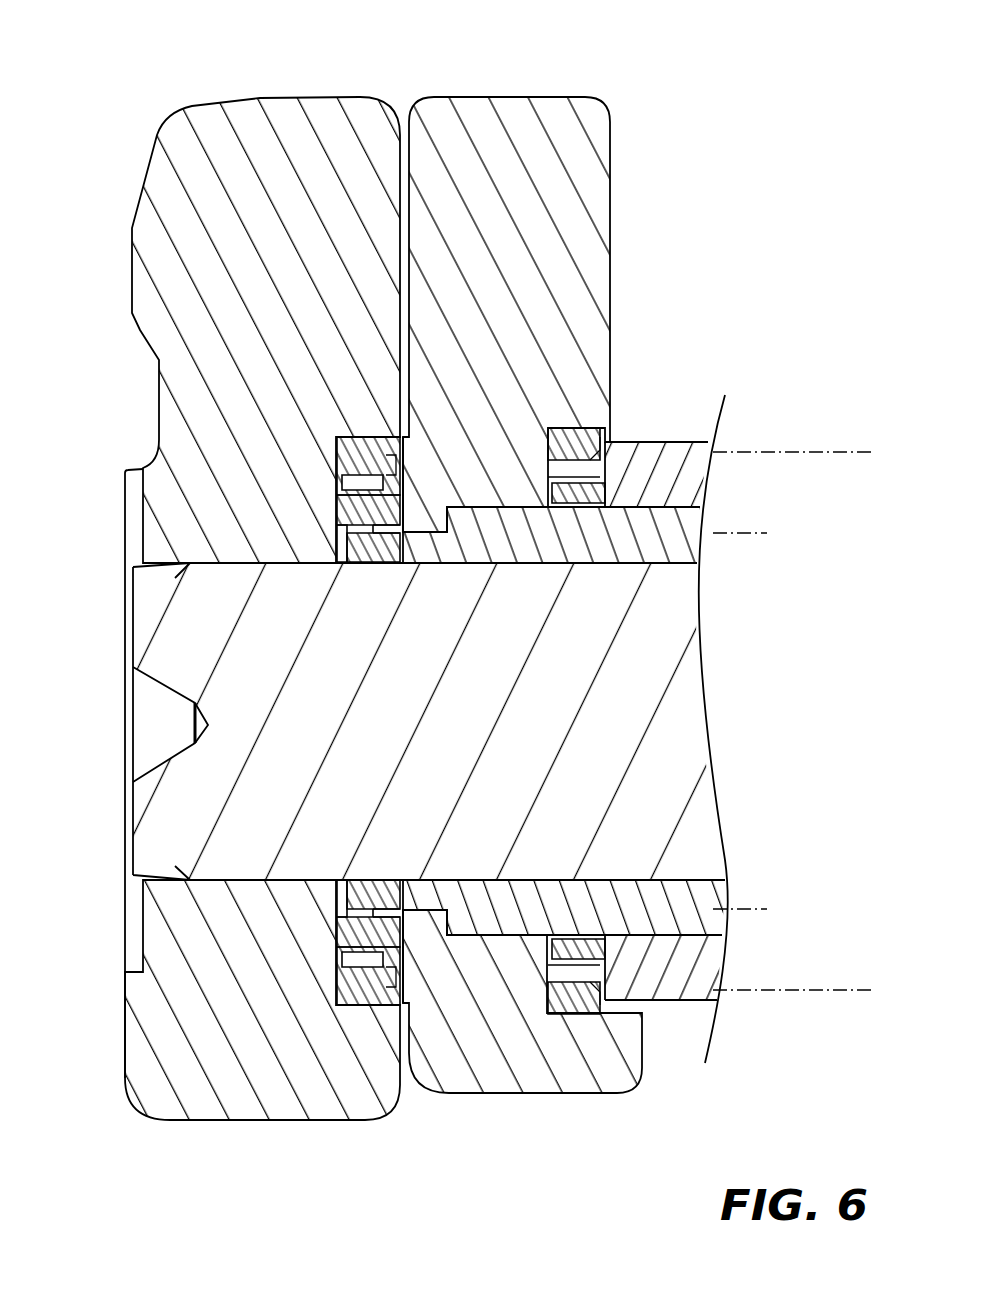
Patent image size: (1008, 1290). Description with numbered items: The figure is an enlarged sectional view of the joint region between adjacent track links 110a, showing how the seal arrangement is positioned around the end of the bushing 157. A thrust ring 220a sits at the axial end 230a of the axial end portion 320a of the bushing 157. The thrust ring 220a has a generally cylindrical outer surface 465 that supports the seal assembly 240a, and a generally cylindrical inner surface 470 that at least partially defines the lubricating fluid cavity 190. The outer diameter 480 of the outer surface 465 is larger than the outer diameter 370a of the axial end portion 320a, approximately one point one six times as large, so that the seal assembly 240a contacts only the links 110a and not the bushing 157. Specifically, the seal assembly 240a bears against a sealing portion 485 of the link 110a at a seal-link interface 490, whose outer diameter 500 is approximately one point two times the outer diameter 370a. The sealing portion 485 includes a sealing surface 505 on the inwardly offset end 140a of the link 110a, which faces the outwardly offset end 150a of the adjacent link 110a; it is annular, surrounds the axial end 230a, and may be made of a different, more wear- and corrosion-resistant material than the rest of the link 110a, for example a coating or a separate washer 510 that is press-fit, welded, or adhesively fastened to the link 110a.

The link 110a is at (417, 583).
The outwardly offset end 150a is at (287, 104).
The inwardly offset end 140a is at (548, 107).
The seal assembly 240a is at (325, 443).
The thrust ring 220a is at (340, 505).
The outer surface 465 is at (337, 507).
The inner surface 470 is at (383, 547).
The axial end 230a is at (390, 520).
The lubricating fluid cavity 190 is at (368, 518).
The bushing 157 is at (450, 513).
The axial end portion 320a is at (440, 872).
The outer diameter 370a is at (760, 909).
The outer diameter 480 is at (440, 684).
The outer diameter 500 is at (870, 990).
The sealing surface 505 is at (395, 1003).
The washer 510 is at (368, 913).
The sealing portion 485 is at (412, 977).
The seal-link interface 490 is at (574, 998).